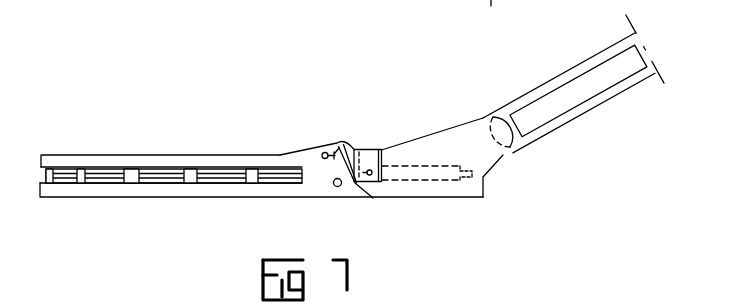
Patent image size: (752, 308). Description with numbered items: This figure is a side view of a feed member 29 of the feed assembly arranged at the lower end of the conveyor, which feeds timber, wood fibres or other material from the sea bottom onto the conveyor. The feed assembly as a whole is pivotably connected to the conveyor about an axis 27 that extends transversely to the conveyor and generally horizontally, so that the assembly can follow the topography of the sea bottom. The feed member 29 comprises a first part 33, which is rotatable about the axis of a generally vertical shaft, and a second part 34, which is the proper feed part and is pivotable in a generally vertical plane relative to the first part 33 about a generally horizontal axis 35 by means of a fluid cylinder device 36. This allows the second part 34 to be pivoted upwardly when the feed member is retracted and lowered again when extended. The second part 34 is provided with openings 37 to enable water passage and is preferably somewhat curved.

The axis 27 is at (490, 136).
The feed member 29 is at (162, 198).
The first part 33 is at (362, 147).
The second part 34 is at (187, 162).
The axis 35 is at (339, 187).
The fluid cylinder device 36 is at (347, 142).
The openings 37 is at (105, 170).